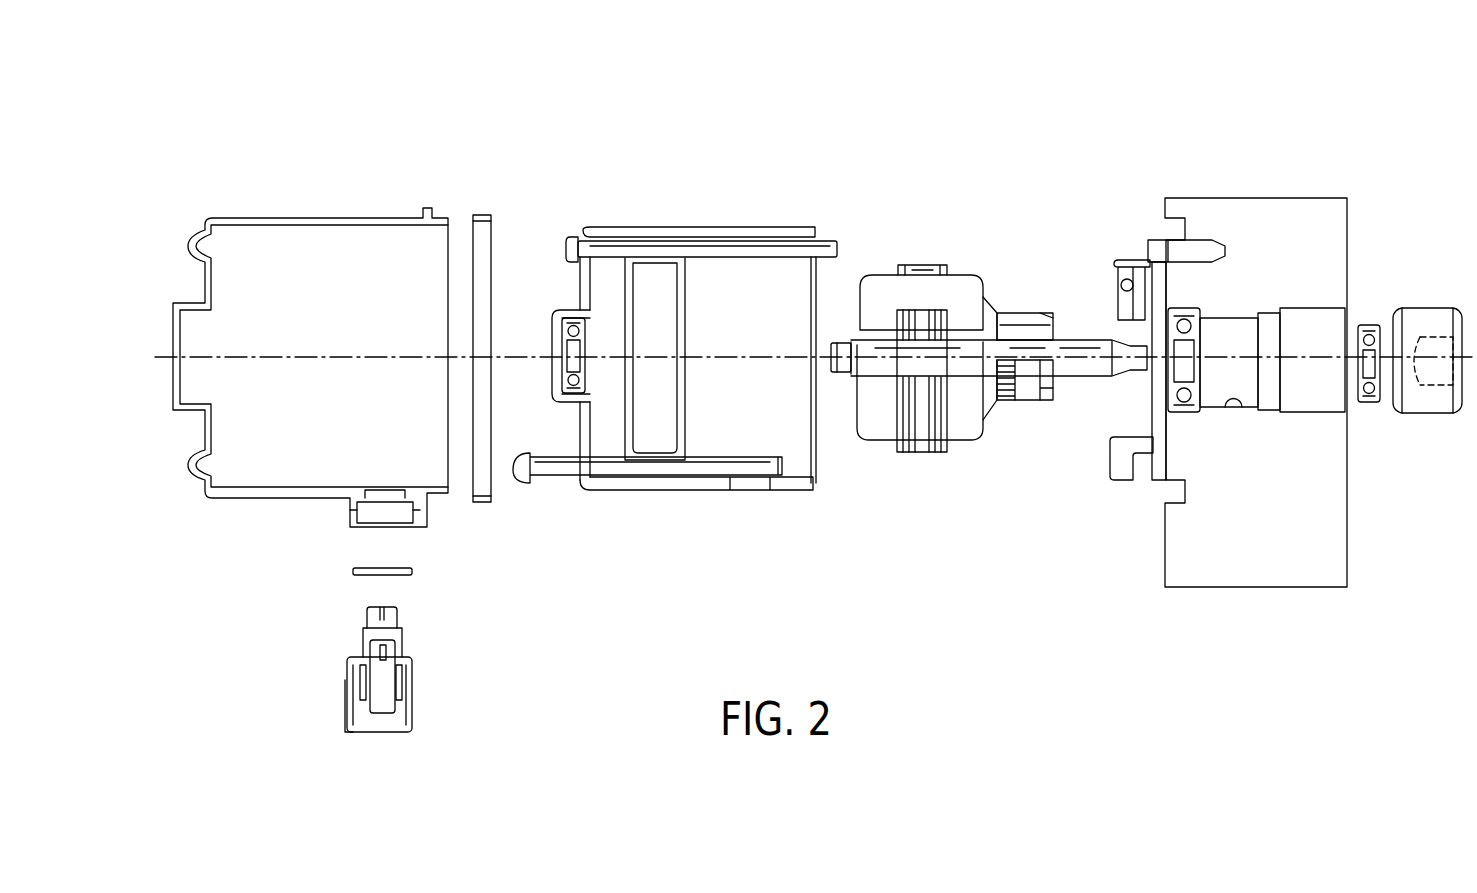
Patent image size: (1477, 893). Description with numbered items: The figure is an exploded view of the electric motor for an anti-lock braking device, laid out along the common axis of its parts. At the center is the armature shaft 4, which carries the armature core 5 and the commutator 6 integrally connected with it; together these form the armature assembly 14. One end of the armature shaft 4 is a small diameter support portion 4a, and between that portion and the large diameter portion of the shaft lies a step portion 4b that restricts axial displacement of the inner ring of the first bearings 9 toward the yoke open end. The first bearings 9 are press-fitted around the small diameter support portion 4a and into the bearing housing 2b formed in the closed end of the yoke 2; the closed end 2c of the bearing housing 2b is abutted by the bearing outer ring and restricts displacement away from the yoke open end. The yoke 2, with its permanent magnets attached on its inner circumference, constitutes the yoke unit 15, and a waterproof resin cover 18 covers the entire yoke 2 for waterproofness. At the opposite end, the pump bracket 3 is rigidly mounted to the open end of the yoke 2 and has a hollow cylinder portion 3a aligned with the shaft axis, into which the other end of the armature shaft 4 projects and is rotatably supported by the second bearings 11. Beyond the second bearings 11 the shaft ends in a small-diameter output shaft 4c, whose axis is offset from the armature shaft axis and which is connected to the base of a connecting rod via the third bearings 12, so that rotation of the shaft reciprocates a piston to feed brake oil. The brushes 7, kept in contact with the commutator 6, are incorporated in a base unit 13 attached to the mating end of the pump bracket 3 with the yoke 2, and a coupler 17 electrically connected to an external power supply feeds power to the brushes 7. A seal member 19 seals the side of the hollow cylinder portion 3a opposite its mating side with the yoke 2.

The yoke 2 is at (669, 355).
The bearing housing 2b is at (562, 403).
The closed end of the bearing housing 2c is at (553, 322).
The pump bracket 3 is at (1228, 363).
The hollow cylinder portion 3a is at (1242, 403).
The armature shaft 4 is at (1080, 378).
The small diameter support portion 4a is at (838, 380).
The step portion 4b is at (851, 338).
The output shaft 4c is at (1128, 350).
The armature core 5 is at (882, 432).
The commutator 6 is at (1030, 398).
The brushes 7 is at (1135, 272).
The first bearings 9 is at (566, 312).
The second bearings 11 is at (1182, 410).
The third bearings 12 is at (1367, 325).
The base unit 13 is at (1158, 280).
The armature assembly 14 is at (955, 355).
The yoke unit 15 is at (687, 207).
The coupler 17 is at (387, 692).
The waterproof resin cover 18 is at (351, 220).
The seal member 19 is at (1421, 410).